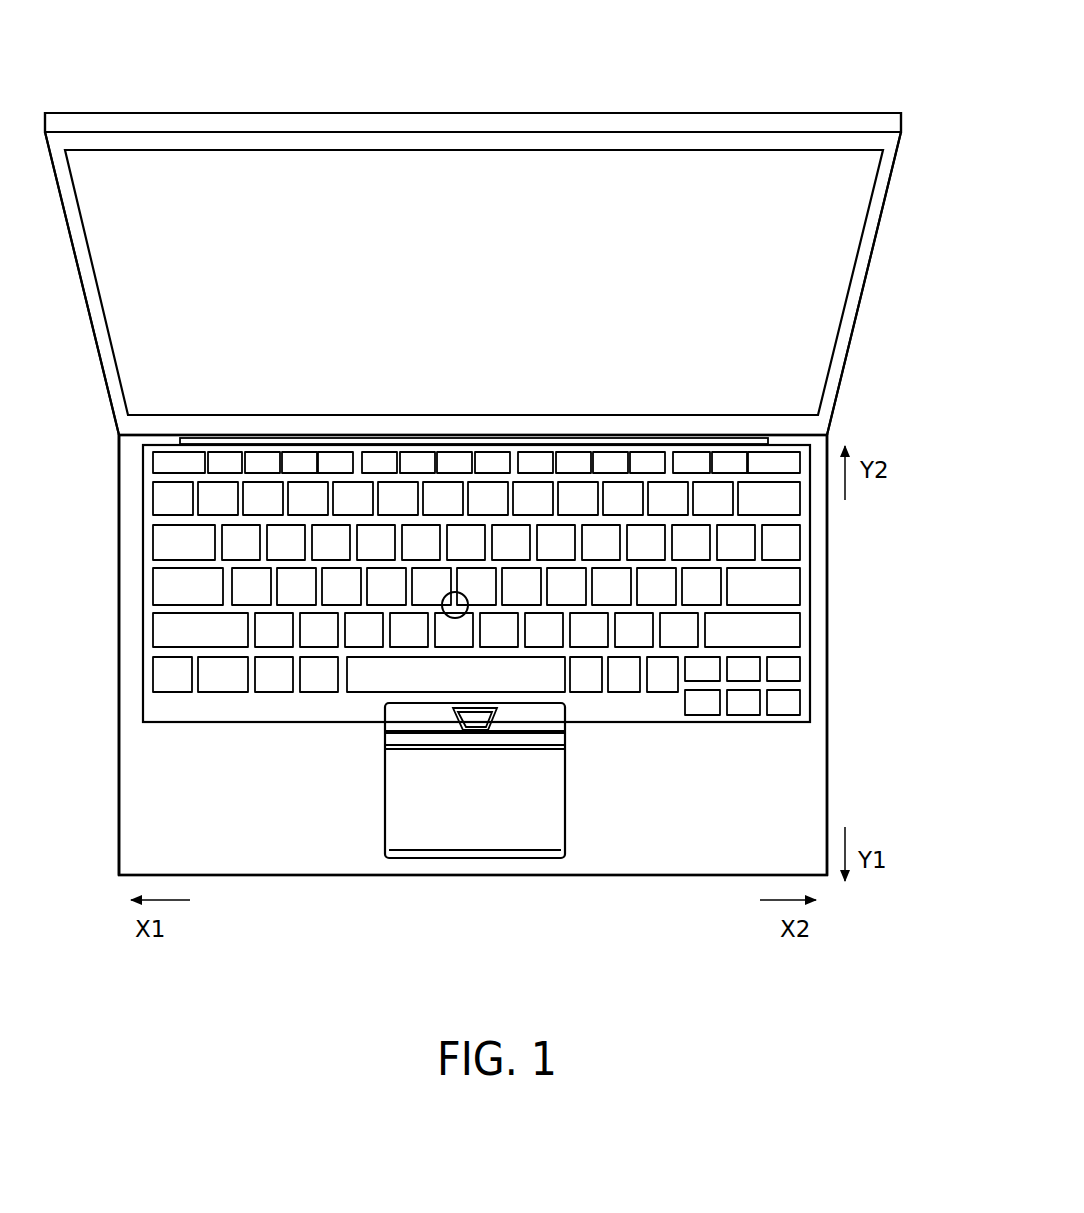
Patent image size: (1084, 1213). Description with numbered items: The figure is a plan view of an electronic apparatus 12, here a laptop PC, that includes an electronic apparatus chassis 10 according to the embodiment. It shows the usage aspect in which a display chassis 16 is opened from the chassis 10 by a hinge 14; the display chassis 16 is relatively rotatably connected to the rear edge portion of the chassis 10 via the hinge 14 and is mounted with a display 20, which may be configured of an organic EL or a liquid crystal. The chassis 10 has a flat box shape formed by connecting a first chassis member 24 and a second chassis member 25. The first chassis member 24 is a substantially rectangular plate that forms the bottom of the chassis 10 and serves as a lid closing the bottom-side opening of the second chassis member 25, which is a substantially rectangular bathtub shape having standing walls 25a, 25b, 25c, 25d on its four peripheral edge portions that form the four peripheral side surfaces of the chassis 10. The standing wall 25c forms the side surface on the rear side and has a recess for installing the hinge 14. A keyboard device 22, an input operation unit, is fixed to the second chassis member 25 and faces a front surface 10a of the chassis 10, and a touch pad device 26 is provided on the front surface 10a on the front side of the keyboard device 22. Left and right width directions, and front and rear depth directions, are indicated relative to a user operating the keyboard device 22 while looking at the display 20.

The electronic apparatus 12 is at (98, 39).
The hinge 14 is at (287, 437).
The display chassis 16 is at (882, 218).
The display 20 is at (825, 272).
The keyboard device 22 is at (146, 560).
The electronic apparatus chassis 10 is at (907, 732).
The front surface 10a is at (135, 786).
The first chassis member 24 is at (828, 793).
The second chassis member 25 is at (800, 755).
The standing wall 25a is at (119, 672).
The standing wall 25b is at (827, 672).
The standing wall 25c is at (787, 435).
The standing wall 25d is at (600, 876).
The touch pad device 26 is at (430, 837).